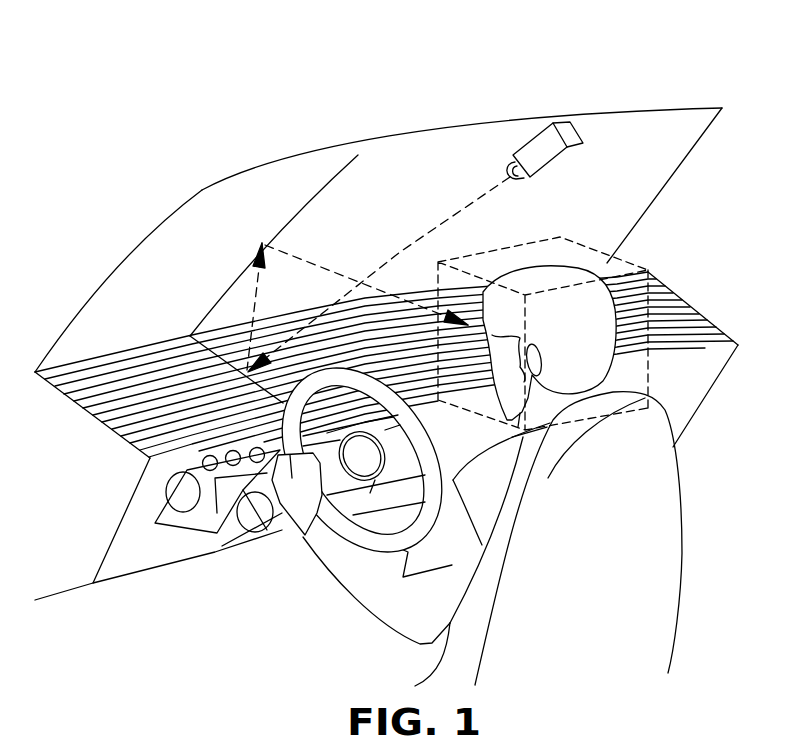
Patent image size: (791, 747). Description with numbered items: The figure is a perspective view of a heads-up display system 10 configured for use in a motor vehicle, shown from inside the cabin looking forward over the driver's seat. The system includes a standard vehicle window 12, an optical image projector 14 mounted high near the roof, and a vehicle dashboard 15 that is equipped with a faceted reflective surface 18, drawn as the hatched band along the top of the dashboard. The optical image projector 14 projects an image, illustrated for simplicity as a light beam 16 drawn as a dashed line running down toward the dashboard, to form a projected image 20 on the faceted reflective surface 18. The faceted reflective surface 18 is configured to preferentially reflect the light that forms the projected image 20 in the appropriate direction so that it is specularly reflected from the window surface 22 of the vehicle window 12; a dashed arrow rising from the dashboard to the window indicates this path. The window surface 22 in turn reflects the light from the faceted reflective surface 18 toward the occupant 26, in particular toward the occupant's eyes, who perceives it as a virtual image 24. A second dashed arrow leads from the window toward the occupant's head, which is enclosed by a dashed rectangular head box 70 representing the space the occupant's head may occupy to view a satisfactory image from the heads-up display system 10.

The heads-up display system 10 is at (184, 143).
The vehicle window 12 is at (122, 262).
The optical image projector 14 is at (527, 140).
The vehicle dashboard 15 is at (707, 353).
The light beam 16 is at (437, 232).
The faceted reflective surface 18 is at (113, 407).
The projected image 20 is at (250, 382).
The window surface 22 is at (265, 193).
The virtual image 24 is at (225, 283).
The occupant 26 is at (395, 583).
The head box 70 is at (648, 382).